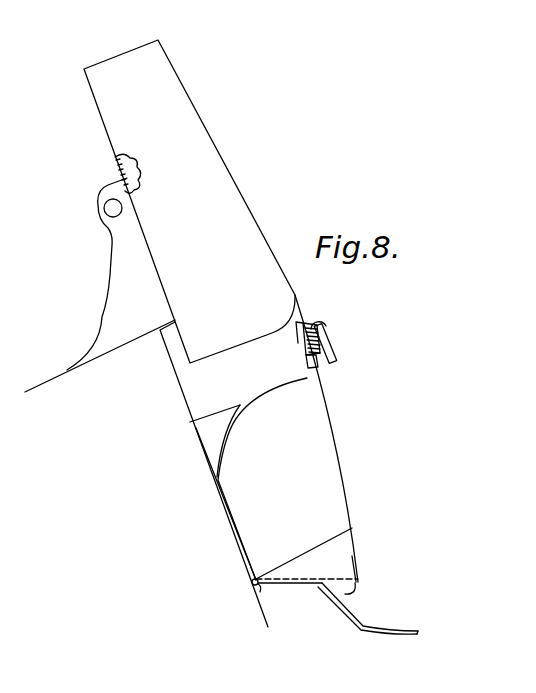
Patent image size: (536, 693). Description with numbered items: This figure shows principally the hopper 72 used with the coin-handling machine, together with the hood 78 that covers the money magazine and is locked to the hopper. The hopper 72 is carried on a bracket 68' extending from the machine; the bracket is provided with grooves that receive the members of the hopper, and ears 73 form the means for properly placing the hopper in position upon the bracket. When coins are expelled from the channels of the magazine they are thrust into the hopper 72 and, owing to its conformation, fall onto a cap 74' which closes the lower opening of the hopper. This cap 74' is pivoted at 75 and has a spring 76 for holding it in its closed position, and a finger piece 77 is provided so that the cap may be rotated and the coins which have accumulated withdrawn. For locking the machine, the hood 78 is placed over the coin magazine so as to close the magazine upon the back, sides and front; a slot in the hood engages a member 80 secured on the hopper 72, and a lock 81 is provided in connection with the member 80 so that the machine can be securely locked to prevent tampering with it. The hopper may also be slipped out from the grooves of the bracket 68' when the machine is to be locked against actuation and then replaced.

The hood 78 is at (189, 201).
The bracket 68' is at (214, 474).
The hopper 72 is at (288, 438).
The ear 73 is at (322, 371).
The member 80 is at (327, 321).
The lock 81 is at (334, 350).
The pivot 75 is at (252, 583).
The spring 76 is at (270, 572).
The cap 74' is at (336, 582).
The finger piece 77 is at (389, 629).